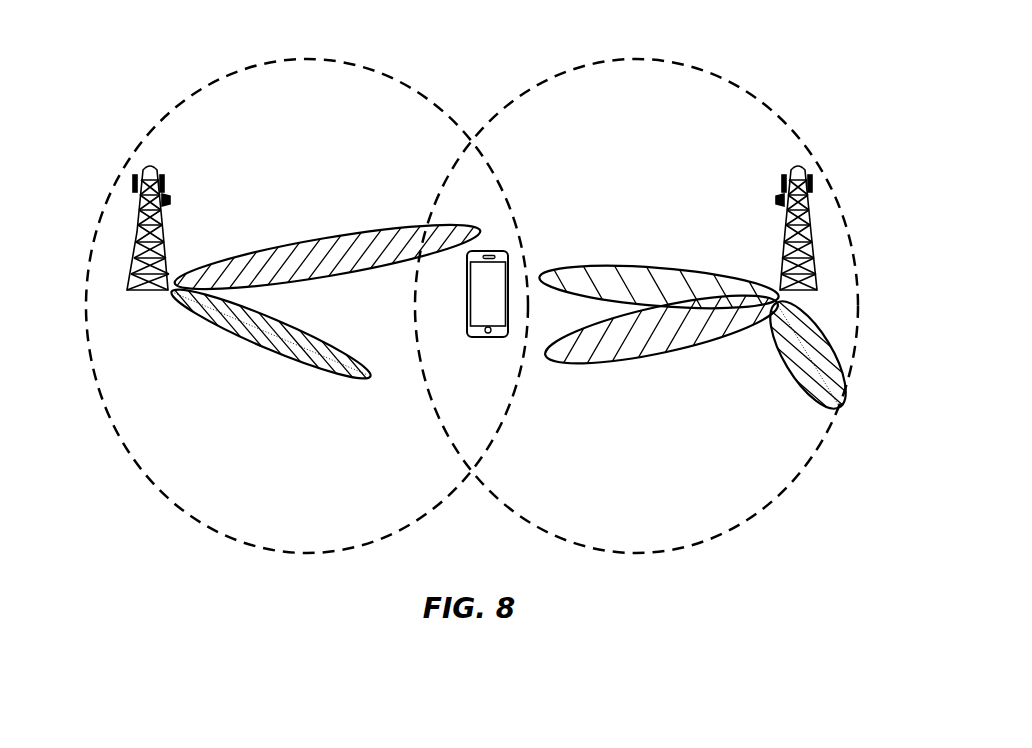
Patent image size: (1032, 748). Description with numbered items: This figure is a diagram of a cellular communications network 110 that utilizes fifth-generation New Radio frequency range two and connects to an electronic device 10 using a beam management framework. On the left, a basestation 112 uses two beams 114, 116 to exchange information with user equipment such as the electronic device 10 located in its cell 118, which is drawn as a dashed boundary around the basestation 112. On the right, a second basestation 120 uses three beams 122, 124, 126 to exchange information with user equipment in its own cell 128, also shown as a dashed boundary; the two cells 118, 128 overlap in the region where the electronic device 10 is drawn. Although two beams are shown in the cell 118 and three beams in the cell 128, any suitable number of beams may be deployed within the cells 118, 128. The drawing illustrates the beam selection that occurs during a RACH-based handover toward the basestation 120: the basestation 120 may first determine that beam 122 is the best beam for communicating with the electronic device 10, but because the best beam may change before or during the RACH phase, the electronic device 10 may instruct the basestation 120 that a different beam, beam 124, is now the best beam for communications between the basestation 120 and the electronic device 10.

The electronic device 10 is at (489, 336).
The cellular communications network 110 is at (814, 62).
The basestation 112 is at (160, 234).
The beam 114 is at (320, 236).
The beam 116 is at (231, 334).
The cell 118 is at (87, 305).
The basestation 120 is at (787, 233).
The beam 122 is at (676, 266).
The beam 124 is at (680, 358).
The beam 126 is at (777, 366).
The cell 128 is at (859, 304).